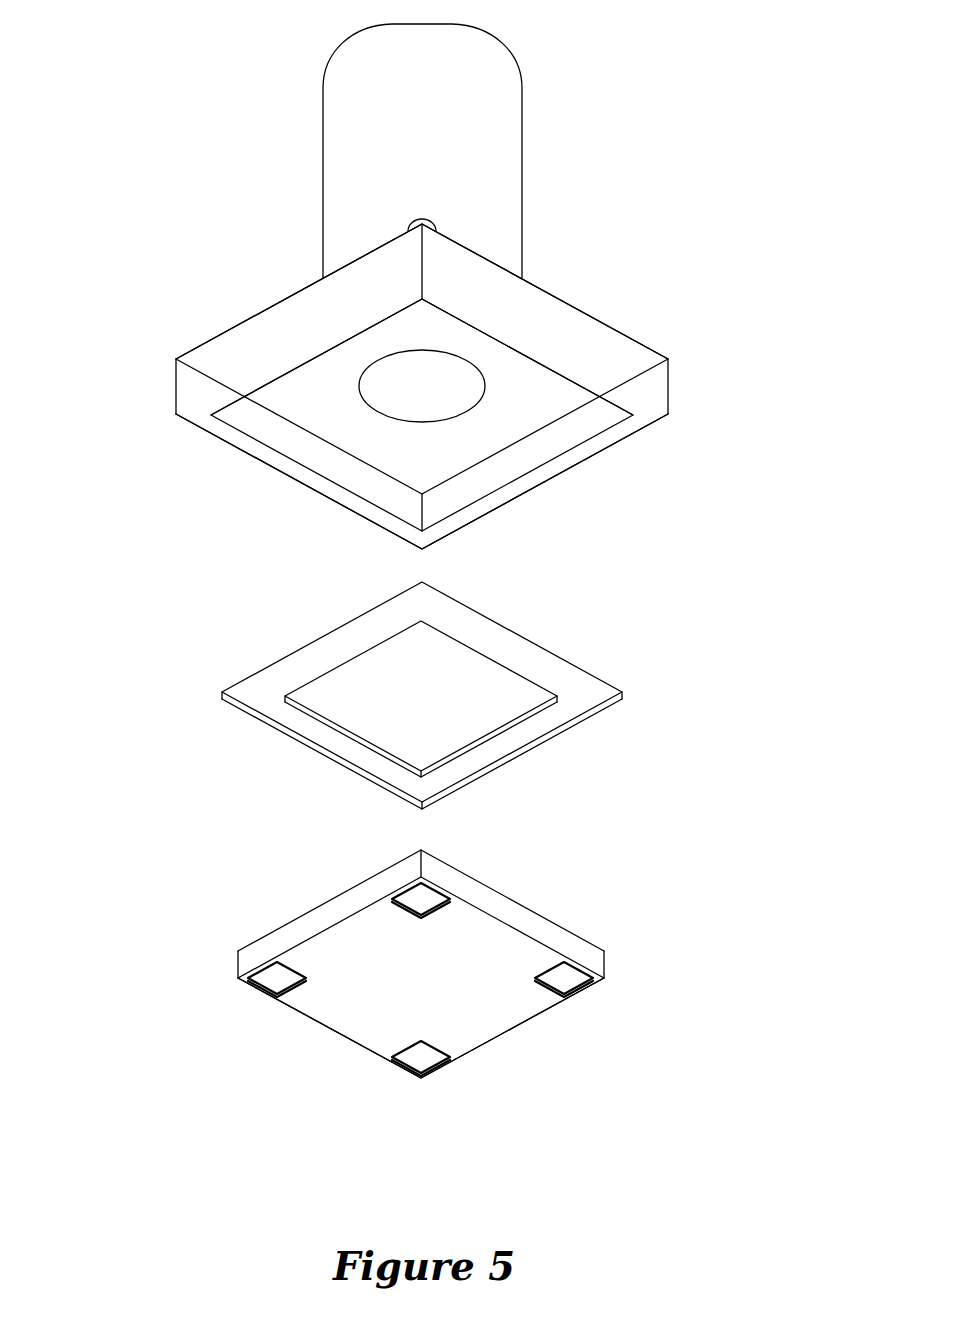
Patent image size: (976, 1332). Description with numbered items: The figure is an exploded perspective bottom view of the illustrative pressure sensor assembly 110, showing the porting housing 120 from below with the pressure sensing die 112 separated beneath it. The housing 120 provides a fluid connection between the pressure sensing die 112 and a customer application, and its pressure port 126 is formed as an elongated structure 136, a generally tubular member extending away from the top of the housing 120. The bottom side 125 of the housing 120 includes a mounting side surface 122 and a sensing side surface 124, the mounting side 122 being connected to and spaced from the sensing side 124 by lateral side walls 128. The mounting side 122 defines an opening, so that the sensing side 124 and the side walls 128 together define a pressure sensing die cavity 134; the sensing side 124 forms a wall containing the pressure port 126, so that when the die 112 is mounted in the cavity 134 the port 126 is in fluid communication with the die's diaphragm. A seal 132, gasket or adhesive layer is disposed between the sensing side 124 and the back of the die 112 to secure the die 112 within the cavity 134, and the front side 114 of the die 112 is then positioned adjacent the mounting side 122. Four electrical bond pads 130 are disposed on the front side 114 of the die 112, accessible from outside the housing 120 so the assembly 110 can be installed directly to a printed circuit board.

The pressure sensor assembly 110 is at (124, 48).
The porting housing 120 is at (601, 119).
The elongated structure 136 is at (345, 164).
The mounting side surface 122 is at (640, 414).
The lateral side walls 128 is at (242, 345).
The pressure sensing die cavity 134 is at (301, 402).
The sensing side surface 124 is at (453, 452).
The pressure port 126 is at (452, 400).
The bottom side 125 is at (318, 562).
The seal 132 is at (572, 708).
The pressure sensing die 112 is at (606, 850).
The front side 114 is at (485, 1025).
The electrical bond pads 130 is at (418, 898).